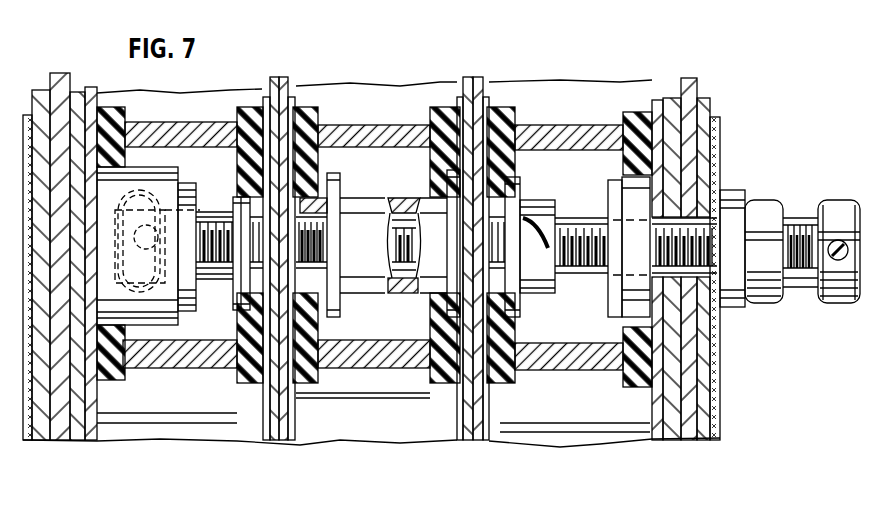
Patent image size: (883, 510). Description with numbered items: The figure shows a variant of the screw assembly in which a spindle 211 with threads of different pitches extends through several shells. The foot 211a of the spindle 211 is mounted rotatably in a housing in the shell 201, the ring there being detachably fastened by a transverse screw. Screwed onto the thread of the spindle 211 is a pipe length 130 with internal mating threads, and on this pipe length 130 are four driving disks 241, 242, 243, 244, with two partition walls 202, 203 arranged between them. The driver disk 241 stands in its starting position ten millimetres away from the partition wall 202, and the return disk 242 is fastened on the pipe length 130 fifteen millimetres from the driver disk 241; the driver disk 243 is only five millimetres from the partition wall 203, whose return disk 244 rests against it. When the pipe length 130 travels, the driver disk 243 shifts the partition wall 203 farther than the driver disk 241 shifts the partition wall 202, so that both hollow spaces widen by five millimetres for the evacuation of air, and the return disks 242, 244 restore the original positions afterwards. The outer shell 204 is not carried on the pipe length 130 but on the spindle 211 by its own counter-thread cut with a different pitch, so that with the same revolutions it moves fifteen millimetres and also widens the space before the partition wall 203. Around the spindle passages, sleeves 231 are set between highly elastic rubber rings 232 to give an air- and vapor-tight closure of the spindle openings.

The shell 201 is at (105, 57).
The partition wall 202 is at (283, 77).
The partition wall 203 is at (472, 77).
The outer shell 204 is at (722, 58).
The pipe length 130 is at (365, 212).
The spindle 211 is at (798, 220).
The foot of the spindle 211a is at (124, 295).
The sleeve 231 is at (374, 352).
The rubber ring 232 is at (433, 383).
The driver disk 241 is at (233, 307).
The return disk 242 is at (340, 305).
The driver disk 243 is at (430, 300).
The return disk 244 is at (520, 310).